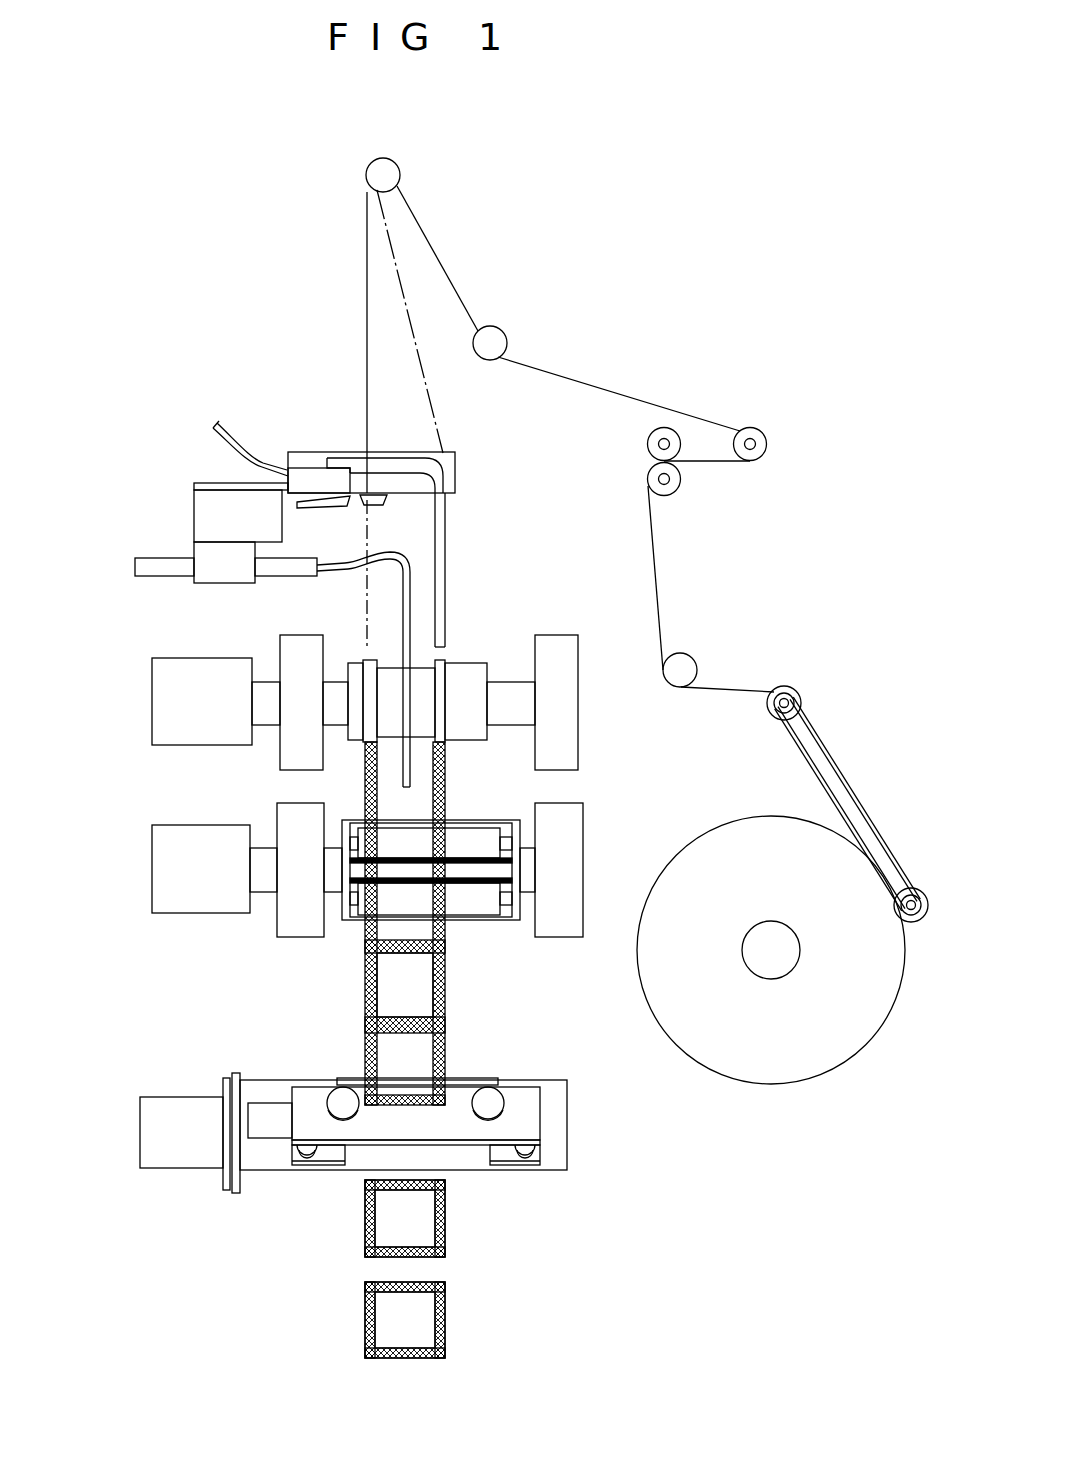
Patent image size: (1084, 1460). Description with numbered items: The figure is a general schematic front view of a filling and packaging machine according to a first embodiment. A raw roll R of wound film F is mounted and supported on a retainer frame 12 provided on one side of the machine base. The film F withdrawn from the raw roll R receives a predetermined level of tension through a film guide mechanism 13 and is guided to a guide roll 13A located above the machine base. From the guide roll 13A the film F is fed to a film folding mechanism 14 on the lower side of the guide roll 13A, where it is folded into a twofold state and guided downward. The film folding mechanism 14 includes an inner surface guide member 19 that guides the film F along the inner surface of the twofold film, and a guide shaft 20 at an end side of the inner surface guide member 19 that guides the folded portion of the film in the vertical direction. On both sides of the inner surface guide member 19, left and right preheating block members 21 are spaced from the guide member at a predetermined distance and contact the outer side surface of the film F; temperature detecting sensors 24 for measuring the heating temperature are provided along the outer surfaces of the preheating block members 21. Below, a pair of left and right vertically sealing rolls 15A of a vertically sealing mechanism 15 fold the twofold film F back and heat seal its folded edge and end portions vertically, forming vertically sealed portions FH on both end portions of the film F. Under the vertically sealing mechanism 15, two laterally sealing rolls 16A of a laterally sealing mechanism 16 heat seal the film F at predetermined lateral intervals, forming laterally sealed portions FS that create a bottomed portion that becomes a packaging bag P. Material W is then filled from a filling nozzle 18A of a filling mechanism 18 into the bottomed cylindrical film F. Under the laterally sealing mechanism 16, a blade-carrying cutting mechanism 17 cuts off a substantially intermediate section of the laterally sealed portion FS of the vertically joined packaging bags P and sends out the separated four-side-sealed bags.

The retainer frame 12 is at (756, 958).
The film guide mechanism 13 is at (613, 351).
The guide roll 13A is at (387, 180).
The film folding mechanism 14 is at (371, 509).
The vertically sealing mechanism 15 is at (195, 648).
The vertically sealing rolls 15A is at (370, 705).
The laterally sealing mechanism 16 is at (192, 820).
The laterally sealing rolls 16A is at (385, 867).
The cutting mechanism 17 is at (228, 1060).
The filling mechanism 18 is at (172, 552).
The filling nozzle 18A is at (405, 623).
The inner surface guide member 19 is at (350, 489).
The guide shaft 20 is at (438, 570).
The preheating block members 21 is at (448, 462).
The temperature detecting sensors 24 is at (383, 507).
The film F is at (378, 315).
The vertically sealed portions FH is at (375, 803).
The laterally sealed portions FS is at (365, 953).
The material W is at (402, 997).
The packaging bags P is at (455, 1233).
The raw roll R is at (848, 1029).